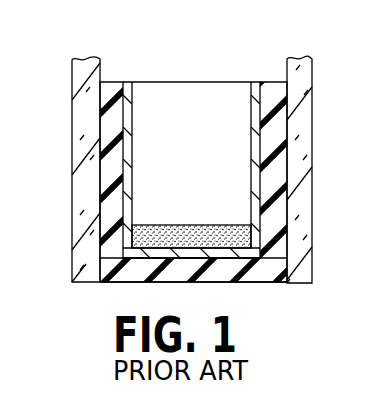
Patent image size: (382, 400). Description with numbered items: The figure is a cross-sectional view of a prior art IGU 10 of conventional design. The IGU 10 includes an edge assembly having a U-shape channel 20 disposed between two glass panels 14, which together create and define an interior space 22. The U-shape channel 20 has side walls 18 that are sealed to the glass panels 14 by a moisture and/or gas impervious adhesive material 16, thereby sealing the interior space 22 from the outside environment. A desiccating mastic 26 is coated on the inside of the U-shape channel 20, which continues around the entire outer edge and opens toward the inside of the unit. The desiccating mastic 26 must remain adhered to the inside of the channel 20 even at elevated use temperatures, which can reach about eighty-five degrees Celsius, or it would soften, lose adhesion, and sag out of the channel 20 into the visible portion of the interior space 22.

The IGU 10 is at (63, 217).
The glass panels 14 is at (72, 147).
The adhesive material 16 is at (110, 82).
The side walls 18 is at (251, 118).
The U-shape channel 20 is at (171, 267).
The interior space 22 is at (182, 73).
The desiccating mastic 26 is at (168, 228).